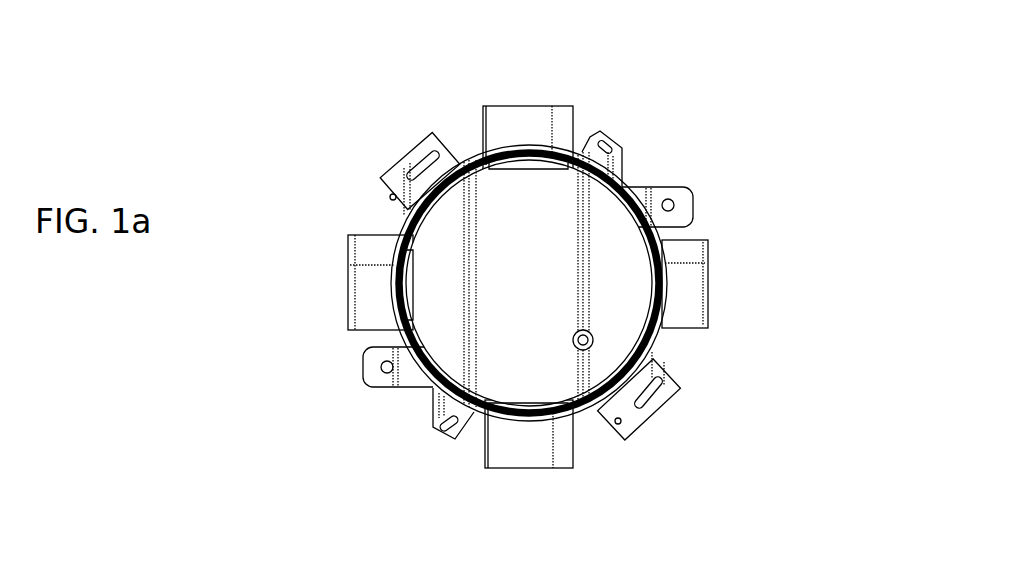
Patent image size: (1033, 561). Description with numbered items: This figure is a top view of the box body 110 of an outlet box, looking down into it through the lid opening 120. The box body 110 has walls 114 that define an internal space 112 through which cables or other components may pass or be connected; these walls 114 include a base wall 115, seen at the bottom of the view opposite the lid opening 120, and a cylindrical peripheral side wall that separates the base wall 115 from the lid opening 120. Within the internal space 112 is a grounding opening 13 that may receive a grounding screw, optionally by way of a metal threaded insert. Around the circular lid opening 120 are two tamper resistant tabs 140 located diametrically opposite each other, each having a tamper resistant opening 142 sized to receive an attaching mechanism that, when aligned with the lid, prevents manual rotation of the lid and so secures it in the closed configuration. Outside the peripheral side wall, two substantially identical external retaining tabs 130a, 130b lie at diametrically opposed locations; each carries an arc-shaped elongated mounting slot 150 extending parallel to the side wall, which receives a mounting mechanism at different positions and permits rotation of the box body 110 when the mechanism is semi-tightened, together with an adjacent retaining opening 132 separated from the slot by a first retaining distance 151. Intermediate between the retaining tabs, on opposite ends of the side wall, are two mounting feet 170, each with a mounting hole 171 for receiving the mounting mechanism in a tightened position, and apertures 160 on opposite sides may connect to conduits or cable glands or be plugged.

The box body 110 is at (786, 275).
The internal space 112 is at (466, 327).
The walls 114 is at (401, 235).
The base wall 115 is at (604, 250).
The lid opening 120 is at (423, 325).
The grounding opening 13 is at (597, 340).
The external retaining tab 130a is at (450, 122).
The external retaining tab 130b is at (681, 387).
The retaining opening 132 is at (383, 192).
The tamper resistant tab 140 is at (602, 128).
The tamper resistant opening 142 is at (620, 143).
The elongated mounting slot 150 is at (416, 160).
The first retaining distance 151 is at (393, 180).
The aperture 160 is at (345, 281).
The mounting foot 170 is at (684, 191).
The mounting hole 171 is at (685, 207).